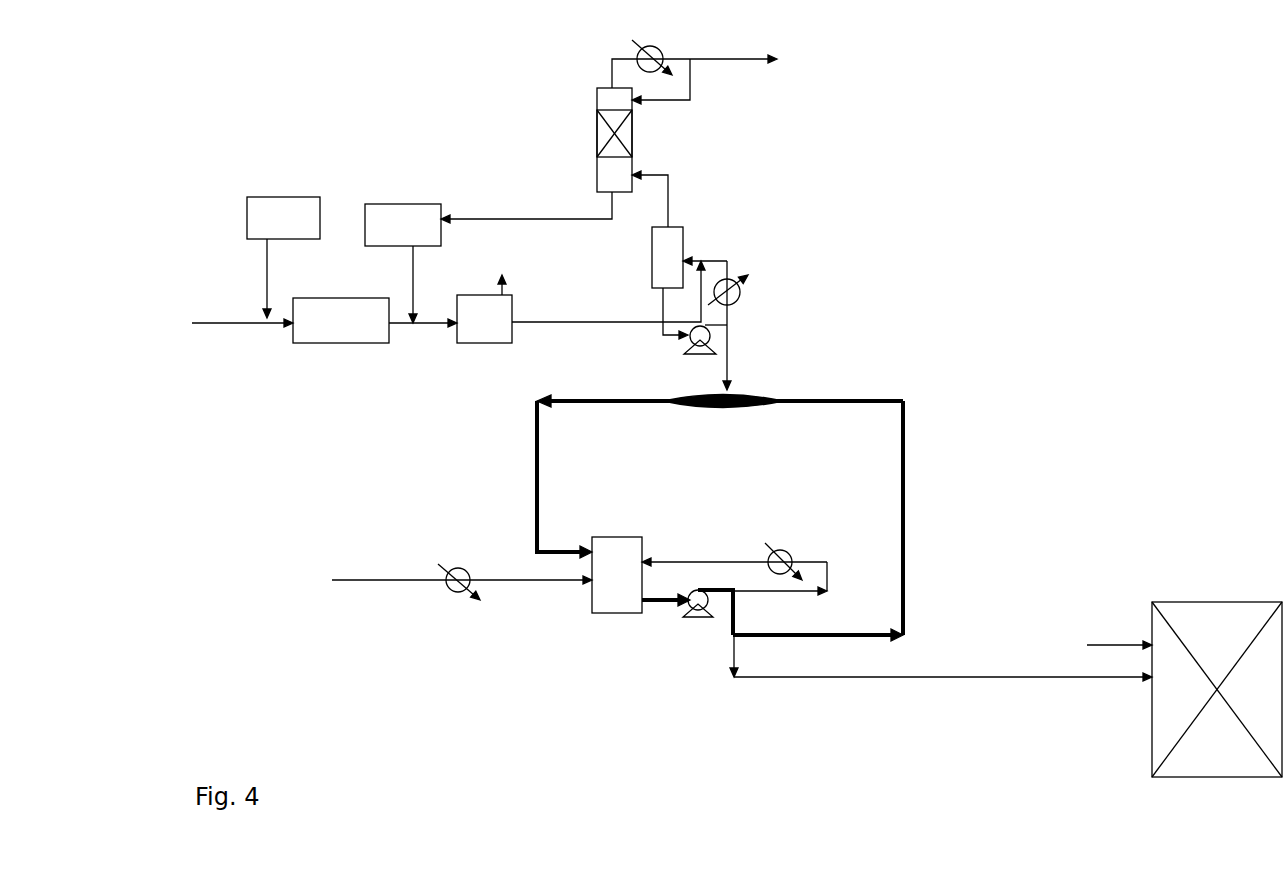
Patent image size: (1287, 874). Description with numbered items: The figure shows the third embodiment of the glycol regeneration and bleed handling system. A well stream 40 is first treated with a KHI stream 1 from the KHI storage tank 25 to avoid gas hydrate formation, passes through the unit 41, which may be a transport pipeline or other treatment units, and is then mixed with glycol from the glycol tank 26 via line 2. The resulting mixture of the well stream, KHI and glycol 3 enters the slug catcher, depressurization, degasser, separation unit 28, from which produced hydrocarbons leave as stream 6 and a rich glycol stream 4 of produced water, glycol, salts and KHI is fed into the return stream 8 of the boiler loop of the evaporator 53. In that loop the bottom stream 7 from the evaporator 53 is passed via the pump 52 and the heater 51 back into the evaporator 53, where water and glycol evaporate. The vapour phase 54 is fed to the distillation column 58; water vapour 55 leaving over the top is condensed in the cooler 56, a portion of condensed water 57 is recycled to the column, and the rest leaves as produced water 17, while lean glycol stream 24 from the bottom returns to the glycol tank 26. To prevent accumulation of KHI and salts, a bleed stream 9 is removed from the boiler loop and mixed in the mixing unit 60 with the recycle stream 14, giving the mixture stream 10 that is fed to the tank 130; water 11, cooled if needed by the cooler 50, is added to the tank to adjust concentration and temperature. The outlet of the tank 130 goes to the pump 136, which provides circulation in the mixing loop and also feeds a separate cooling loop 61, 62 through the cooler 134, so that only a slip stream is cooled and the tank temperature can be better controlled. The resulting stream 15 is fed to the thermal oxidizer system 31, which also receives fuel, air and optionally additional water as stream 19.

The KHI stream 1 is at (262, 278).
The line 2 is at (421, 284).
The mixture of the well stream, KHI and glycol 3 is at (423, 336).
The rich glycol stream 4 is at (608, 306).
The stream 6 is at (509, 278).
The bottom stream 7 is at (675, 326).
The return stream 8 is at (705, 250).
The bleed stream 9 is at (736, 325).
The mixture stream 10 is at (720, 476).
The water 11 is at (462, 581).
The stream 14 is at (818, 521).
The stream 15 is at (941, 658).
The produced water 17 is at (797, 67).
The stream 19 is at (1117, 635).
The lean glycol stream 24 is at (526, 207).
The KHI storage tank 25 is at (283, 218).
The glycol tank 26 is at (403, 225).
The slug catcher, depressurization, degasser, separation unit 28 is at (484, 319).
The thermal oxidizer system 31 is at (1217, 689).
The well stream 40 is at (237, 338).
The unit 41 is at (341, 320).
The cooler 50 is at (459, 596).
The heater 51 is at (744, 291).
The pump 52 is at (705, 354).
The evaporator 53 is at (668, 257).
The vapour phase 54 is at (667, 197).
The water vapour 55 is at (675, 67).
The cooler 56 is at (652, 45).
The condensed water 57 is at (674, 93).
The distillation column 58 is at (596, 140).
The mixing unit 60 is at (723, 421).
The cooling loop 61 is at (798, 581).
The cooling loop 62 is at (734, 551).
The tank 130 is at (617, 594).
The cooler 134 is at (788, 552).
The pump 136 is at (687, 618).